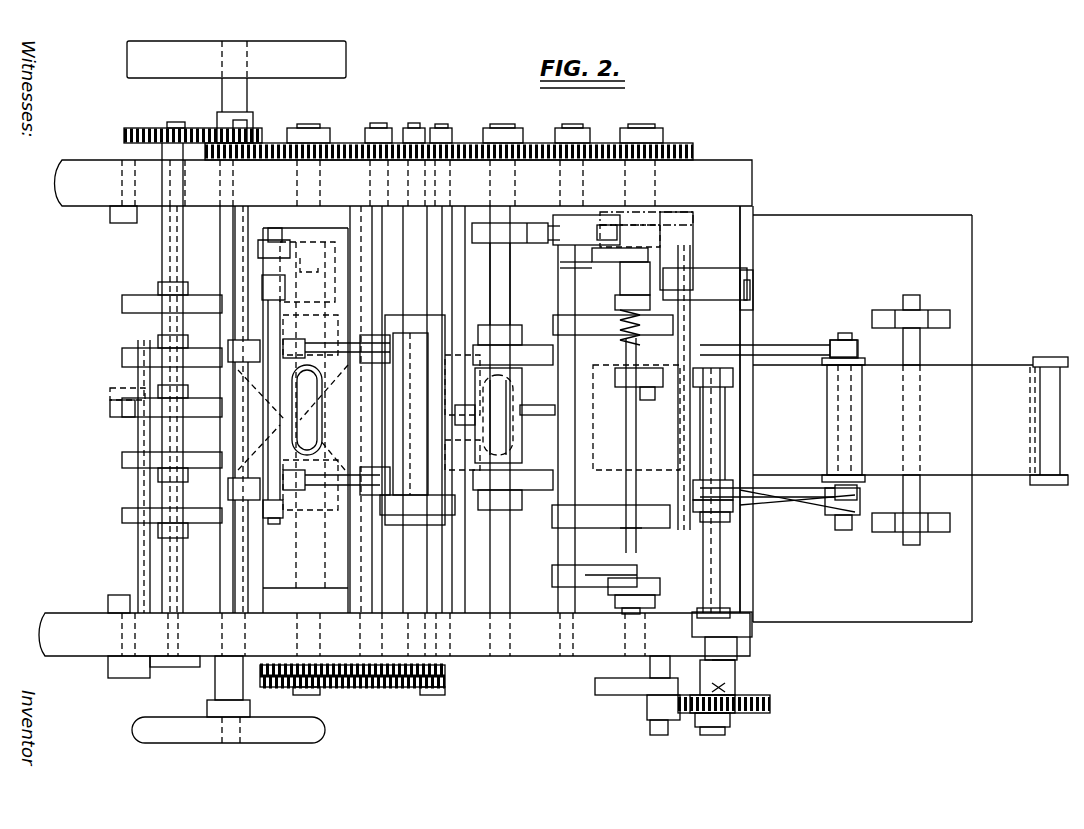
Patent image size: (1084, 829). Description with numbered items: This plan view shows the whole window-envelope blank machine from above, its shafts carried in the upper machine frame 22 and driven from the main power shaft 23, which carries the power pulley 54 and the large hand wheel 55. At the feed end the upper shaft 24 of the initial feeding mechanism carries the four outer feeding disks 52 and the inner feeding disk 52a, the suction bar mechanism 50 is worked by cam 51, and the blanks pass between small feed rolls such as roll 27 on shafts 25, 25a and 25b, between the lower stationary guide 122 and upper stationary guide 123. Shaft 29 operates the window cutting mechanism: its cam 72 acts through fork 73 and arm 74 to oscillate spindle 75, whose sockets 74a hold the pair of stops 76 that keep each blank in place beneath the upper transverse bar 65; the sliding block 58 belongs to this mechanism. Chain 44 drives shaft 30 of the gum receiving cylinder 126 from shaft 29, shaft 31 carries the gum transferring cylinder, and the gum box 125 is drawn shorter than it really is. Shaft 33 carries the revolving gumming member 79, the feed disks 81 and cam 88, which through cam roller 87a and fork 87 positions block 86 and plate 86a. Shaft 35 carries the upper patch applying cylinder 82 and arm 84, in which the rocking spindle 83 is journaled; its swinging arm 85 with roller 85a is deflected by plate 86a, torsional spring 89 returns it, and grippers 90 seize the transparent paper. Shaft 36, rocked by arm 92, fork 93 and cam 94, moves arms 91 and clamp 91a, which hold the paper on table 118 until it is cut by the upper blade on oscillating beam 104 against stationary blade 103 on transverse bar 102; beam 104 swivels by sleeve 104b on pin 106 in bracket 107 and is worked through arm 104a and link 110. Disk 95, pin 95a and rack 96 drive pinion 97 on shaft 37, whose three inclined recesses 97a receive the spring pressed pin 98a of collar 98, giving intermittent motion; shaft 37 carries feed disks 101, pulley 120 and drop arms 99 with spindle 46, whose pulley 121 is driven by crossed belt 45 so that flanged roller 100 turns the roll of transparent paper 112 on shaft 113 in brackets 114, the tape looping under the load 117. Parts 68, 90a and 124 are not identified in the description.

The upper machine frame 22 is at (505, 408).
The main power shaft 23 is at (228, 392).
The upper shaft of the initial feeding mechanism 24 is at (172, 122).
The feed roll shaft 25 is at (252, 118).
The feed roll shaft 25a is at (372, 124).
The feed roll shaft 25b is at (446, 124).
The small feed roll 27 is at (218, 486).
The window punching shaft 29 is at (312, 124).
The gum receiving cylinder shaft 30 is at (400, 124).
The gum transferring cylinder shaft 31 is at (461, 409).
The gumming member shaft 33 is at (505, 124).
The upper patch applying cylinder shaft 35 is at (635, 124).
The clamp shaft 36 is at (572, 124).
The transparent paper feed shaft 37 is at (720, 572).
The chain 44 is at (335, 688).
The crossed belt 45 is at (790, 520).
The spindle 46 is at (840, 532).
The suction bar and mechanism 50 is at (138, 484).
The cam 51 is at (150, 672).
The upper and outer feeding disks 52 is at (172, 410).
The inner feeding disk 52a is at (166, 401).
The power pulley 54 is at (236, 59).
The hand wheel 55 is at (228, 730).
The sliding block 58 is at (304, 417).
The upper transverse bar 65 is at (305, 420).
The slot 68 is at (306, 410).
The cam 72 is at (319, 271).
The fork 73 is at (285, 278).
The arm 74 is at (252, 238).
The socket 74a is at (290, 338).
The spindle 75 is at (275, 232).
The stops 76 is at (332, 344).
The revolving gumming member 79 is at (520, 400).
The feed disks 81 is at (513, 417).
The upper patch applying cylinder 82 is at (636, 417).
The revolving and rocking spindle 83 is at (626, 392).
The arm 84 is at (615, 304).
The swinging arm 85 is at (620, 286).
The cam roller 85a is at (605, 256).
The block 86 is at (630, 232).
The plate 86a is at (590, 266).
The fork 87 is at (522, 250).
The cam roller 87a is at (545, 232).
The cam 88 is at (510, 233).
The torsional spring 89 is at (620, 320).
The grippers 90 is at (639, 377).
The lug 90a is at (672, 402).
The arms 91 is at (562, 324).
The clamp 91a is at (712, 420).
The arm 92 is at (552, 574).
The fork 93 is at (650, 580).
The cam 94 is at (615, 592).
The disk 95 is at (608, 690).
The pin 95a is at (655, 727).
The rack 96 is at (740, 695).
The pinion 97 is at (710, 706).
The inclined recesses 97a is at (735, 672).
The collar 98 is at (755, 650).
The spring pressed pin 98a is at (735, 686).
The drop arms 99 is at (803, 352).
The flanged roller 100 is at (855, 402).
The feed disks 101 is at (733, 380).
The transverse bar 102 is at (752, 240).
The stationary blade 103 is at (716, 524).
The oscillating beam 104 is at (705, 518).
The arm 104a is at (690, 243).
The sleeve 104b is at (705, 270).
The pin 106 is at (753, 290).
The bracket 107 is at (753, 276).
The link 110 is at (568, 228).
The roll of transparent paper 112 is at (910, 420).
The shaft 113 is at (920, 350).
The brackets 114 is at (882, 312).
The load 117 is at (1052, 485).
The table 118 is at (626, 528).
The pulley 120 is at (724, 501).
The pulley 121 is at (850, 505).
The stationary guide 122 is at (462, 412).
The upper stationary guide 123 is at (522, 422).
The slot 124 is at (562, 405).
The gum box 125 is at (400, 526).
The gum receiving cylinder 126 is at (415, 420).